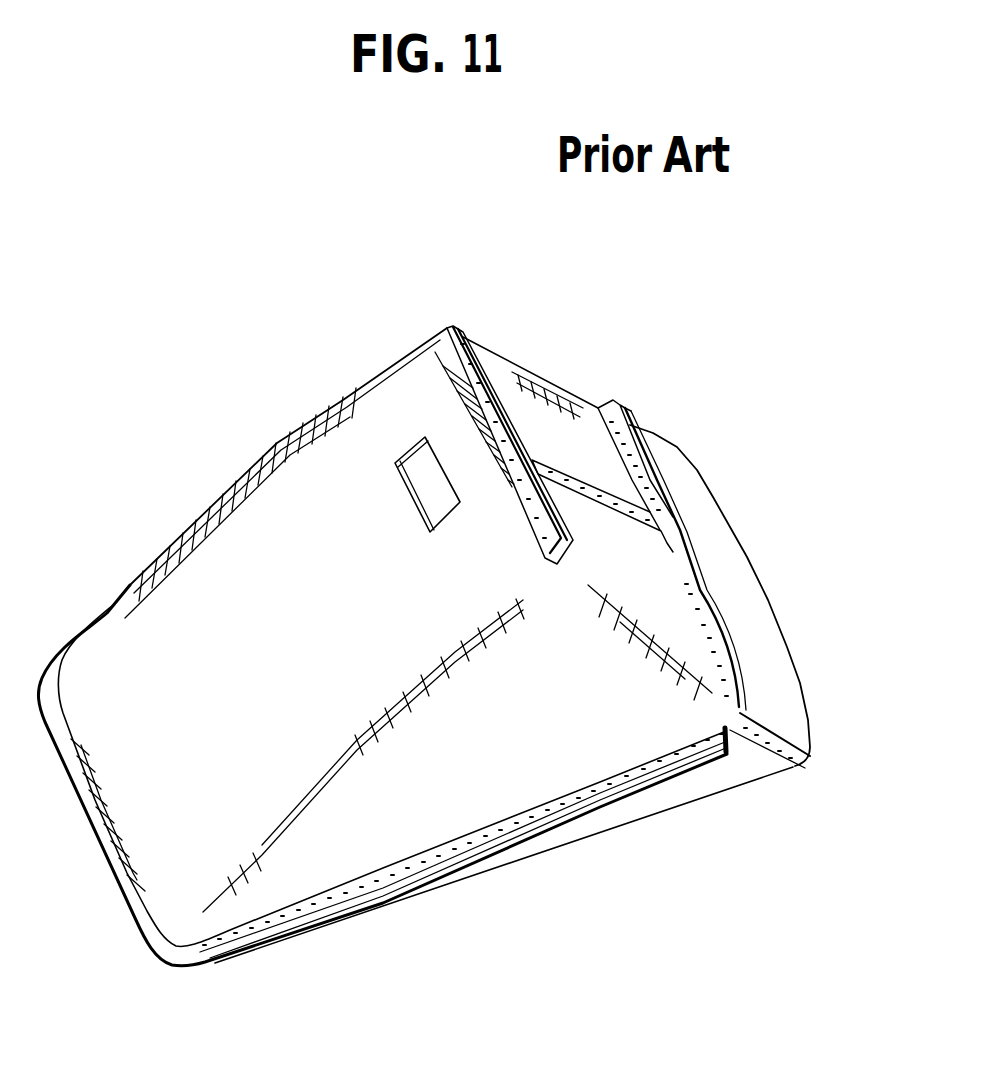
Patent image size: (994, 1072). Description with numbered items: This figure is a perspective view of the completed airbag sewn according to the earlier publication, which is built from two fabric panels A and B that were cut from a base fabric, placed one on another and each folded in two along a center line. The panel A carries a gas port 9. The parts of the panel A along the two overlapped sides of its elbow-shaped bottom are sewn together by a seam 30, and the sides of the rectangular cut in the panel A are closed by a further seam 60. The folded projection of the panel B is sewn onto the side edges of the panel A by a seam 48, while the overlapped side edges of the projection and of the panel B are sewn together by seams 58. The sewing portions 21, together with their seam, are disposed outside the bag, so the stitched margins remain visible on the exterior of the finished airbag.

The gas port 9 is at (427, 492).
The sewing portions 21 is at (440, 867).
The seam 30 is at (613, 507).
The seam 48 is at (621, 448).
The seam 58 is at (757, 750).
The seam 60 is at (464, 396).
The panel A is at (246, 736).
The panel B is at (547, 833).